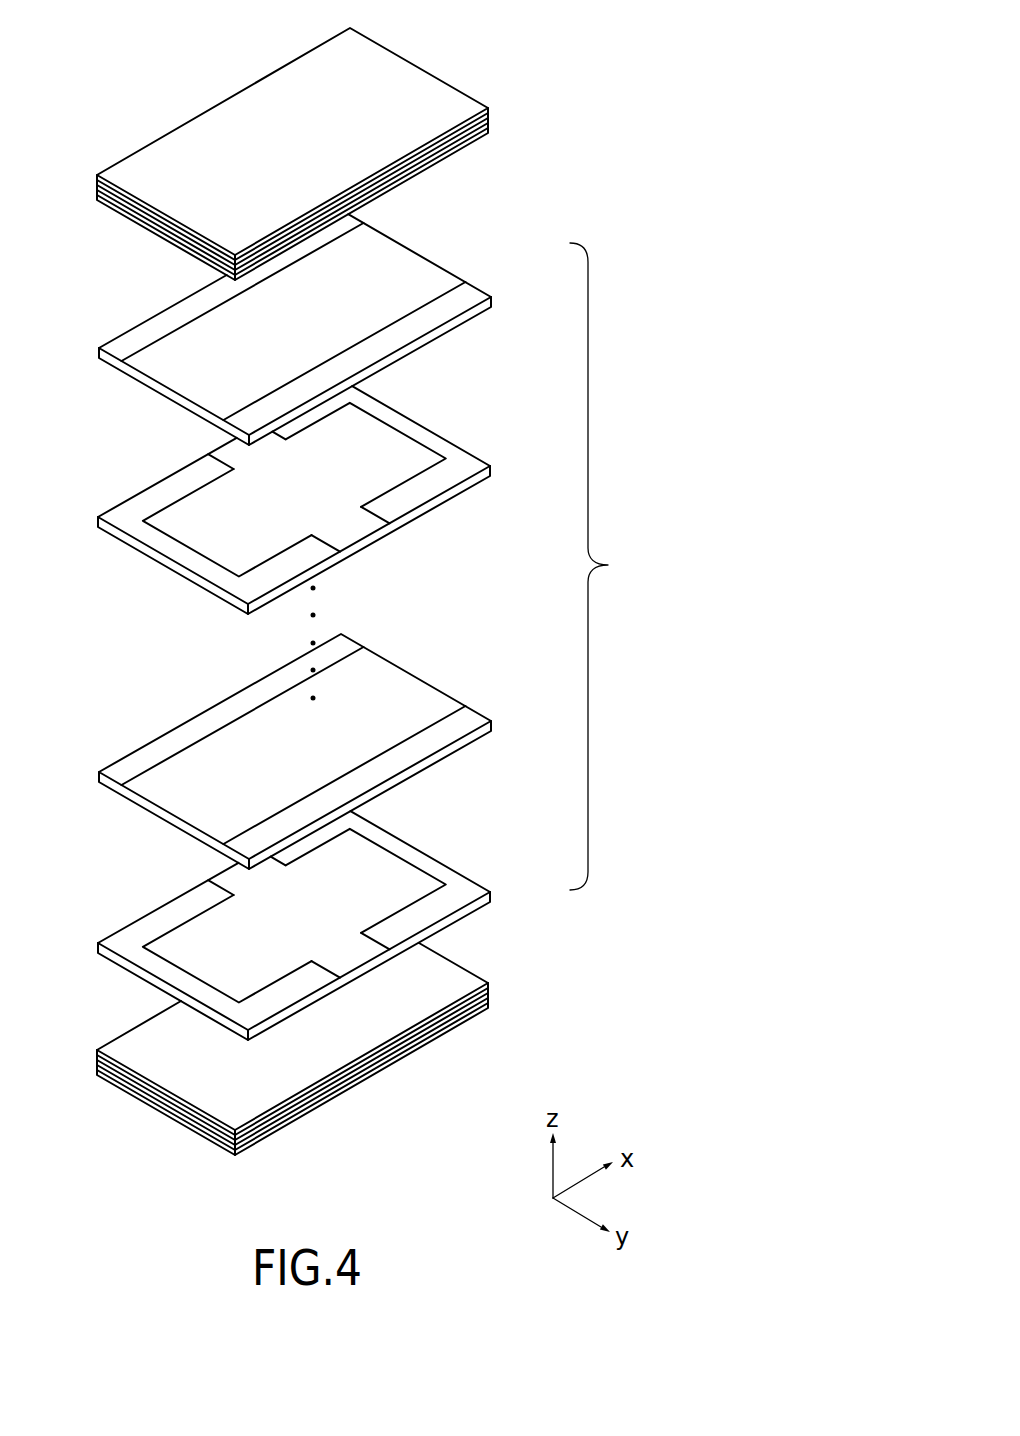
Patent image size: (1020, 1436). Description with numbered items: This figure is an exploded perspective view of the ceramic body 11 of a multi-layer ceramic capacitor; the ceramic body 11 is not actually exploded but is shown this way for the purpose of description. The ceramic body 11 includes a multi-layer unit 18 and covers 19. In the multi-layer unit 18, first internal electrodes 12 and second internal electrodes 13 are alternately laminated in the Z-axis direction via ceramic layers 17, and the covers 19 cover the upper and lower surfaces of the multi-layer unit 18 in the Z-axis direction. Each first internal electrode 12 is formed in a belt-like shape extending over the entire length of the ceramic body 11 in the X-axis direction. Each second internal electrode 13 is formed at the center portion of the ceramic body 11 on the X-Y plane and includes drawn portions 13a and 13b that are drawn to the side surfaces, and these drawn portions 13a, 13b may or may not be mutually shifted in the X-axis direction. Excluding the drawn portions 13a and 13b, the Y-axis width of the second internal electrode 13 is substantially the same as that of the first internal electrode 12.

The ceramic body 11 is at (460, 59).
The first internal electrode 12 is at (415, 276).
The second internal electrode 13 is at (406, 447).
The drawn portion 13a is at (226, 447).
The drawn portion 13b is at (350, 532).
The ceramic layer 17 is at (473, 292).
The multi-layer unit 18 is at (610, 566).
The cover 19 is at (497, 105).